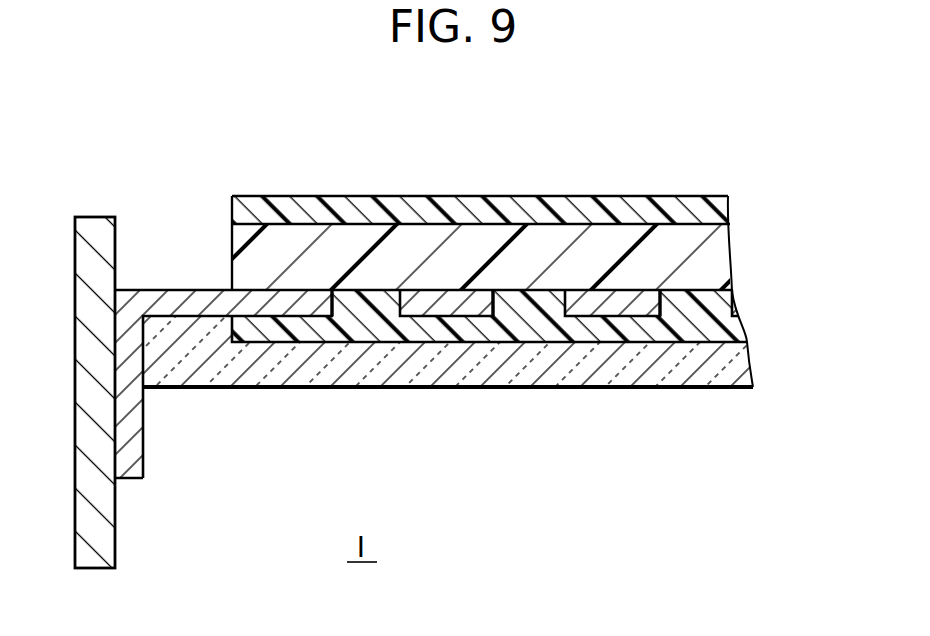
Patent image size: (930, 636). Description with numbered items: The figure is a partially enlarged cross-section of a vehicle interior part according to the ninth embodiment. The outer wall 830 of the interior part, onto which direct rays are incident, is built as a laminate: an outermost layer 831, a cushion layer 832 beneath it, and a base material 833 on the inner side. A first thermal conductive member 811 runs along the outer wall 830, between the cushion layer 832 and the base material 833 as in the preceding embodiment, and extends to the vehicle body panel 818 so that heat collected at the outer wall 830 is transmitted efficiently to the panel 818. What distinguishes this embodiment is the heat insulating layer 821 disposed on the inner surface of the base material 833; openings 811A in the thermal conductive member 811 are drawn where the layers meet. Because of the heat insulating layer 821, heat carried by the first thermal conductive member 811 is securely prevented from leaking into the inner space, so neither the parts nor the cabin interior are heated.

The first thermal conductive member 811 is at (143, 442).
The openings in frame 811A is at (334, 297).
The vehicle body panel 818 is at (115, 537).
The heat insulating layer 821 is at (615, 388).
The outer wall 830 is at (489, 206).
The first layer of laminate 831 is at (375, 197).
The cushion layer 832 is at (475, 232).
The base material 833 is at (337, 133).